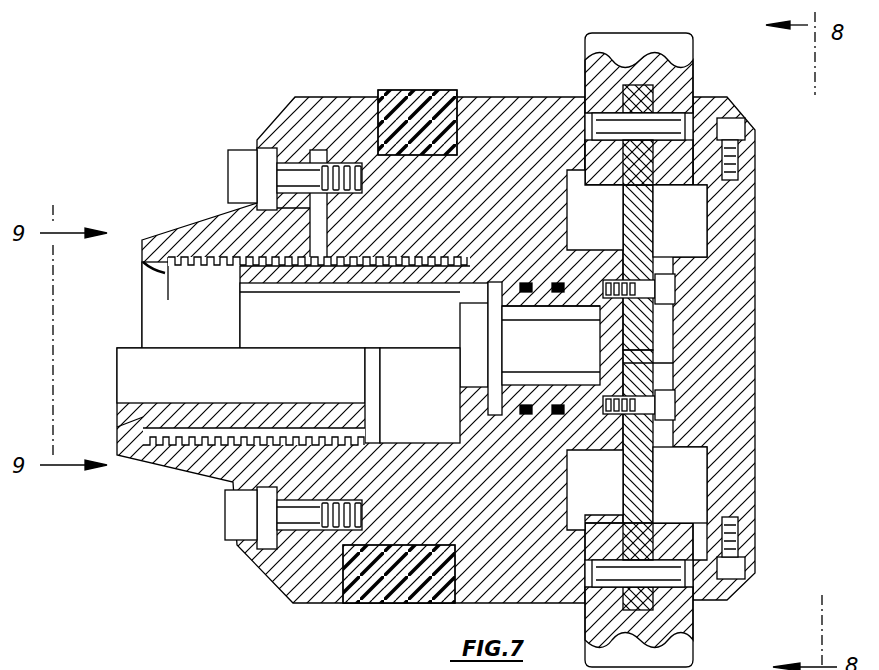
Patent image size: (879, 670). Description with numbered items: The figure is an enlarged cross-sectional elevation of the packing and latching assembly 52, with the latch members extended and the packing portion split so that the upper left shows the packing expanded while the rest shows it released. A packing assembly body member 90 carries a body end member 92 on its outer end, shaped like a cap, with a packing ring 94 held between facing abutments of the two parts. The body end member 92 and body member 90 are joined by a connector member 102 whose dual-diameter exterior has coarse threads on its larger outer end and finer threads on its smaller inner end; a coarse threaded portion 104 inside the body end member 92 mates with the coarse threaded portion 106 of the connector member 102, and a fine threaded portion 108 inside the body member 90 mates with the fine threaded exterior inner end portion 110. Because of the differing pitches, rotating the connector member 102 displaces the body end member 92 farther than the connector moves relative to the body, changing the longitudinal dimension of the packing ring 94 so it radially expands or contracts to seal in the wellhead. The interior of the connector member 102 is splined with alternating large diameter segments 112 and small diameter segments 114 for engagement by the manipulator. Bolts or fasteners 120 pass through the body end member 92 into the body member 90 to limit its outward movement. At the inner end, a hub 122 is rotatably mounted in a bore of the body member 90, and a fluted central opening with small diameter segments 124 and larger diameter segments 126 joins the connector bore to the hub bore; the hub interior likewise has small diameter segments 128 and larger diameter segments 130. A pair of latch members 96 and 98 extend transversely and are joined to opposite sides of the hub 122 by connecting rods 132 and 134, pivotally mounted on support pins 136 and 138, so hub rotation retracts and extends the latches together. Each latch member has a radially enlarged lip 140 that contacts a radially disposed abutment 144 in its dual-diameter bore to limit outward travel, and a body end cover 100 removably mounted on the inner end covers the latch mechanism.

The packing and latching assembly 52 is at (130, 147).
The packing assembly body member 90 is at (535, 103).
The body end member 92 is at (290, 118).
The packing ring 94 is at (405, 92).
The latch member 96 is at (675, 60).
The latch member 98 is at (677, 620).
The body end cover 100 is at (747, 226).
The connector member 102 is at (245, 273).
The coarse threaded portion 104 is at (180, 268).
The coarse threaded portion 106 is at (267, 258).
The fine threaded portion 108 is at (420, 262).
The fine threaded exterior inner end portion 110 is at (360, 260).
The large diameter segments 112 is at (285, 290).
The small diameter segments 114 is at (167, 405).
The bolts or fasteners 120 is at (225, 517).
The hub 122 is at (585, 262).
The small diameter segments 124 is at (480, 368).
The larger diameter segments 126 is at (485, 310).
The small diameter segments 128 is at (527, 373).
The larger diameter segments 130 is at (582, 327).
The connecting rod 132 is at (648, 222).
The connecting rod 134 is at (645, 458).
The support pin 136 is at (640, 280).
The support pin 138 is at (643, 407).
The radially enlarged lip 140 is at (693, 178).
The radially disposed abutment 144 is at (572, 192).